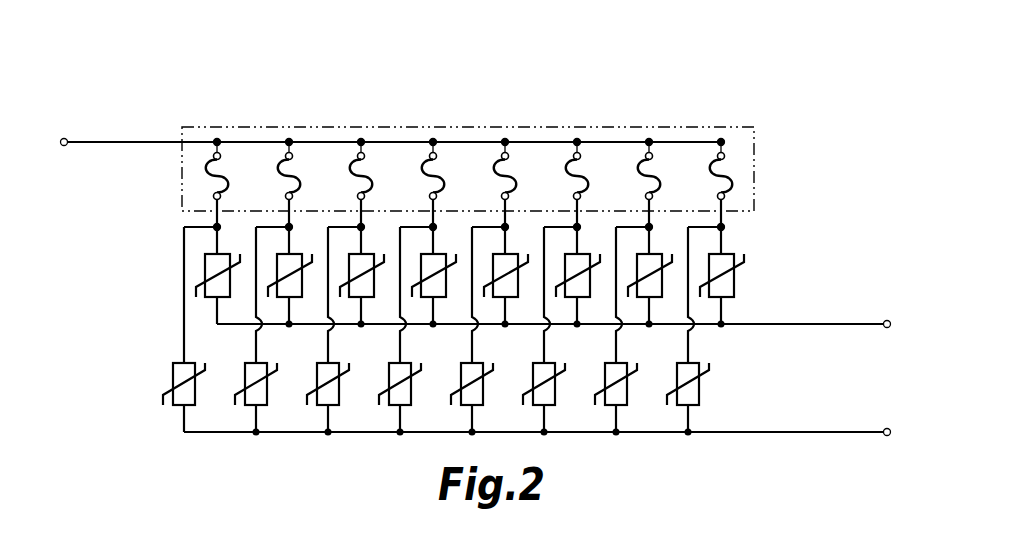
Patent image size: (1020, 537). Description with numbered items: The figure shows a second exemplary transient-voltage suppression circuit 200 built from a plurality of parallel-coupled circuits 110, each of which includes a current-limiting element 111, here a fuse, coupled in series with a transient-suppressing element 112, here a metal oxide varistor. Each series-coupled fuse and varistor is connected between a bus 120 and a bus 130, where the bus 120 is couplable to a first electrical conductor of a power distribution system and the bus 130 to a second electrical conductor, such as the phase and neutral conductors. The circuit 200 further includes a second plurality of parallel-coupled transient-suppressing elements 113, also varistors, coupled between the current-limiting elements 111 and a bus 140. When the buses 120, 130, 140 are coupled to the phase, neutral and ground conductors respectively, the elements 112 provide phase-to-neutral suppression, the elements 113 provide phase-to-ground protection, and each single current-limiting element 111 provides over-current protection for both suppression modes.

The transient-voltage suppression circuit 200 is at (813, 165).
The parallel-coupled circuit 110 is at (755, 232).
The current-limiting element 111 is at (206, 164).
The transient-suppressing element 112 is at (735, 285).
The transient-suppressing element 113 is at (173, 372).
The bus 120 is at (125, 142).
The bus 130 is at (795, 325).
The bus 140 is at (795, 433).